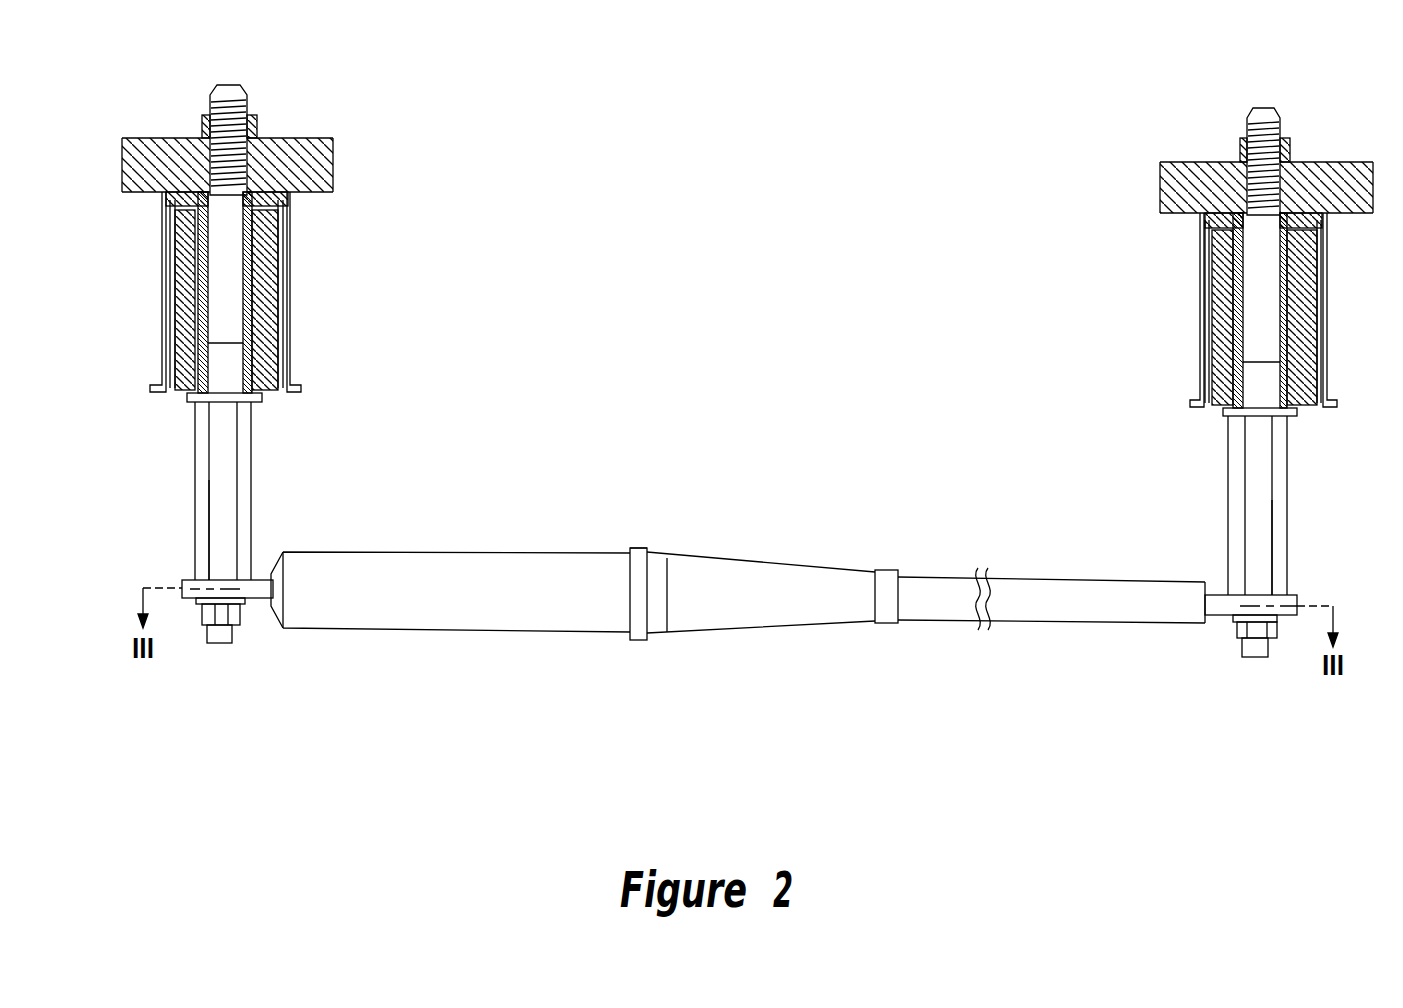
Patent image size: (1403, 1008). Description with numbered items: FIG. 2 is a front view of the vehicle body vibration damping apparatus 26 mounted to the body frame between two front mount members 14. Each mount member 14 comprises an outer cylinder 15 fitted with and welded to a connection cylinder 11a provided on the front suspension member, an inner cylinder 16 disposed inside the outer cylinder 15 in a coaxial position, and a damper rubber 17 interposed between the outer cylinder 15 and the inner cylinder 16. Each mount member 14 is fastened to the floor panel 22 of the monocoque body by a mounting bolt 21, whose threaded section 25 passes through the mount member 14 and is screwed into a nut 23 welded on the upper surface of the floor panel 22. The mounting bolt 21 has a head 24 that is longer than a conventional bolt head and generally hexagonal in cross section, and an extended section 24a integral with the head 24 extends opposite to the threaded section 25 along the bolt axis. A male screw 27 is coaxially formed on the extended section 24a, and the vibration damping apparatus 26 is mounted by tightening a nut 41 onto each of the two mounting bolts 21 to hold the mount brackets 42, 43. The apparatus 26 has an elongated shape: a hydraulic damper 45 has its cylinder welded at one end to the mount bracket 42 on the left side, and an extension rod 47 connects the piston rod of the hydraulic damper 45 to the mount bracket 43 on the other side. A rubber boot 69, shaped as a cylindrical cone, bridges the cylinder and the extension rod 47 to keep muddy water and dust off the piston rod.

The connection cylinder 11a is at (290, 315).
The mount member 14 is at (270, 394).
The outer cylinder 15 is at (287, 282).
The inner cylinder 16 is at (270, 253).
The damper rubber 17 is at (285, 365).
The mounting bolt 21 is at (196, 488).
The floor panel 22 is at (300, 138).
The nut 23 is at (254, 118).
The head 24 is at (220, 445).
The extended section 24a is at (218, 544).
The threaded section 25 is at (231, 85).
The vehicle body vibration damping apparatus 26 is at (597, 675).
The male screw 27 is at (220, 636).
The nut 41 is at (203, 610).
The mount bracket 42 is at (259, 600).
The mount bracket 43 is at (1217, 602).
The hydraulic damper 45 is at (507, 640).
The extension rod 47 is at (952, 608).
The rubber boot 69 is at (753, 633).